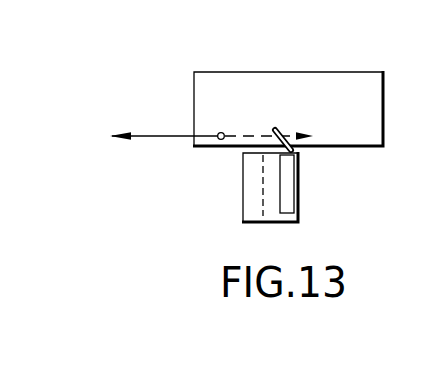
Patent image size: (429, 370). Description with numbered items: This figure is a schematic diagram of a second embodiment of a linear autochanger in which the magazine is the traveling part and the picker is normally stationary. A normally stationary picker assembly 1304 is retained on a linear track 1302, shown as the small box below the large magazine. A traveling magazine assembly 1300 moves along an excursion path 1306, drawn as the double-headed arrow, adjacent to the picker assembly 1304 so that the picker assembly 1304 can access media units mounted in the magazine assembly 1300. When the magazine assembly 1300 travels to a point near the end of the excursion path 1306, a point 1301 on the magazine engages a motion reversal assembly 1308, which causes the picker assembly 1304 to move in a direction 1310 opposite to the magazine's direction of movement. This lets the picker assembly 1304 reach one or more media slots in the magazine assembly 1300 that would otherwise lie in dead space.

The traveling magazine assembly 1300 is at (323, 78).
The point 1301 is at (221, 132).
The linear track 1302 is at (243, 208).
The picker assembly 1304 is at (277, 186).
The excursion path 1306 is at (163, 137).
The motion reversal assembly 1308 is at (274, 131).
The direction 1310 is at (281, 210).